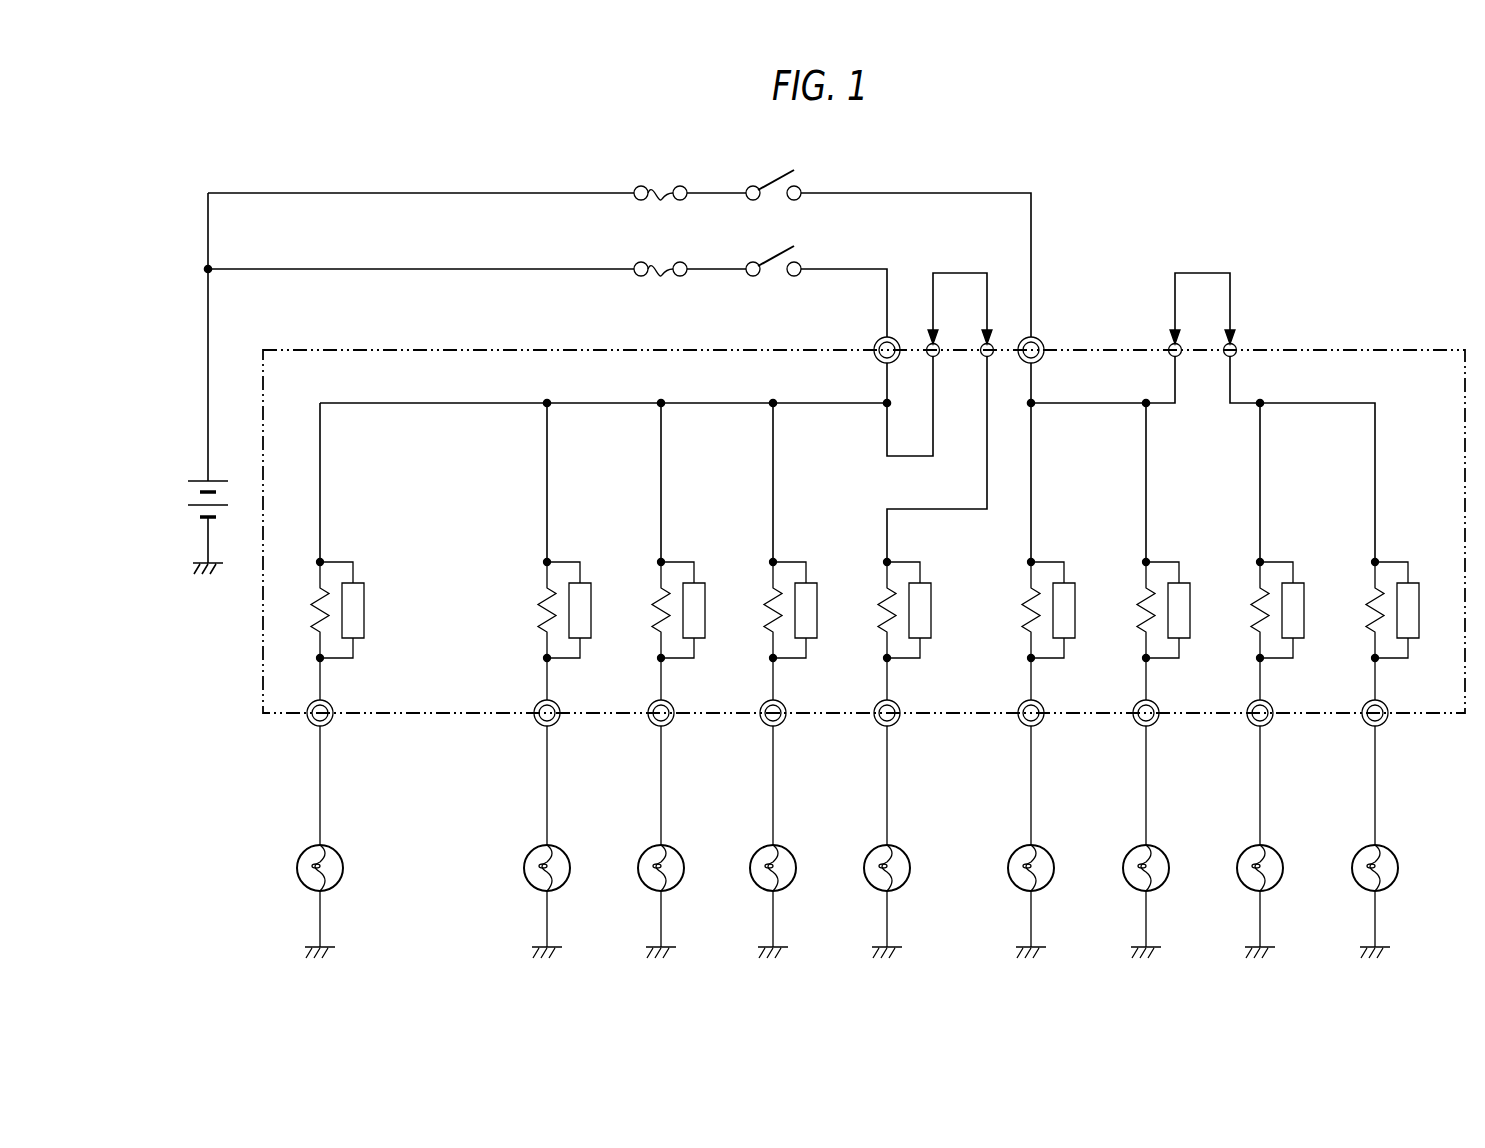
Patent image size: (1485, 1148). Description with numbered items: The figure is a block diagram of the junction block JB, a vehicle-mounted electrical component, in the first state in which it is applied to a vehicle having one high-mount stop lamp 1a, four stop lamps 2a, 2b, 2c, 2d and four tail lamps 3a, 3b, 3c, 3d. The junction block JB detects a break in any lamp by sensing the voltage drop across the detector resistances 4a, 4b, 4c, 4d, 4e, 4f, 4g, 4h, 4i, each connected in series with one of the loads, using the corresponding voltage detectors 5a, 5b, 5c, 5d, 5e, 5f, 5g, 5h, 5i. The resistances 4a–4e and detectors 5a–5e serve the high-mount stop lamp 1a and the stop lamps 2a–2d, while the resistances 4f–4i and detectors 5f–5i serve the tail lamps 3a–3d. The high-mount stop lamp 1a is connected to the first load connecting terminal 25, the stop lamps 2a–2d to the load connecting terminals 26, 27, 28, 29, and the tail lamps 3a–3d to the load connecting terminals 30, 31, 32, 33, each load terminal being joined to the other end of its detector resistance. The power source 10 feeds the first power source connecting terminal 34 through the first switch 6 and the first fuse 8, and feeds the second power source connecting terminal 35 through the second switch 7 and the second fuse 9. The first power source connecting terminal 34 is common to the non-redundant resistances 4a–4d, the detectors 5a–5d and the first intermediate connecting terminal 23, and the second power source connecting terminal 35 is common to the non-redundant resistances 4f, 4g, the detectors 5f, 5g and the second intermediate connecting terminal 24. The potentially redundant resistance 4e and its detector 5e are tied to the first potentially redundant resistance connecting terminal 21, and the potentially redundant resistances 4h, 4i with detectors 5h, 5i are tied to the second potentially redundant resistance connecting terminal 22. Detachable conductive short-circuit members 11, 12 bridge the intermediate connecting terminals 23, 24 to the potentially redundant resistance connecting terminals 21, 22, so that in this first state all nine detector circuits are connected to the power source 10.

The high-mount stop lamp 1a is at (306, 850).
The stop lamp 2a is at (533, 850).
The stop lamp 2b is at (647, 850).
The stop lamp 2c is at (759, 850).
The stop lamp 2d is at (873, 850).
The tail lamp 3a is at (1017, 850).
The tail lamp 3b is at (1132, 850).
The tail lamp 3c is at (1246, 850).
The tail lamp 3d is at (1361, 850).
The detector resistance 4a is at (317, 594).
The detector resistance 4b is at (544, 594).
The detector resistance 4c is at (658, 594).
The detector resistance 4d is at (770, 594).
The potentially redundant resistance 4e is at (884, 594).
The detector resistance 4f is at (1028, 594).
The detector resistance 4g is at (1143, 594).
The potentially redundant resistance 4h is at (1257, 594).
The potentially redundant resistance 4i is at (1372, 594).
The voltage detector 5a is at (360, 582).
The voltage detector 5b is at (587, 582).
The voltage detector 5c is at (701, 582).
The voltage detector 5d is at (813, 582).
The voltage detector 5e is at (927, 582).
The voltage detector 5f is at (1071, 582).
The voltage detector 5g is at (1186, 582).
The voltage detector 5h is at (1300, 582).
The voltage detector 5i is at (1415, 582).
The first switch 6 is at (769, 260).
The second switch 7 is at (769, 183).
The first fuse 8 is at (663, 265).
The second fuse 9 is at (663, 188).
The power source 10 is at (194, 481).
The short-circuit member 11 is at (953, 273).
The short-circuit member 12 is at (1202, 273).
The first male potentially redundant resistance connecting terminal 21 is at (992, 342).
The second male potentially redundant resistance connecting terminal 22 is at (1235, 342).
The first intermediate connecting terminal 23 is at (938, 342).
The second intermediate connecting terminal 24 is at (1180, 342).
The first load connecting terminal 25 is at (309, 701).
The load connecting terminal 26 is at (536, 701).
The load connecting terminal 27 is at (650, 701).
The load connecting terminal 28 is at (762, 701).
The load connecting terminal 29 is at (876, 701).
The load connecting terminal 30 is at (1020, 701).
The load connecting terminal 31 is at (1135, 701).
The load connecting terminal 32 is at (1249, 701).
The load connecting terminal 33 is at (1364, 701).
The first male power source connecting terminal 34 is at (878, 339).
The second male power source connecting terminal 35 is at (1042, 340).
The junction block JB is at (1362, 352).